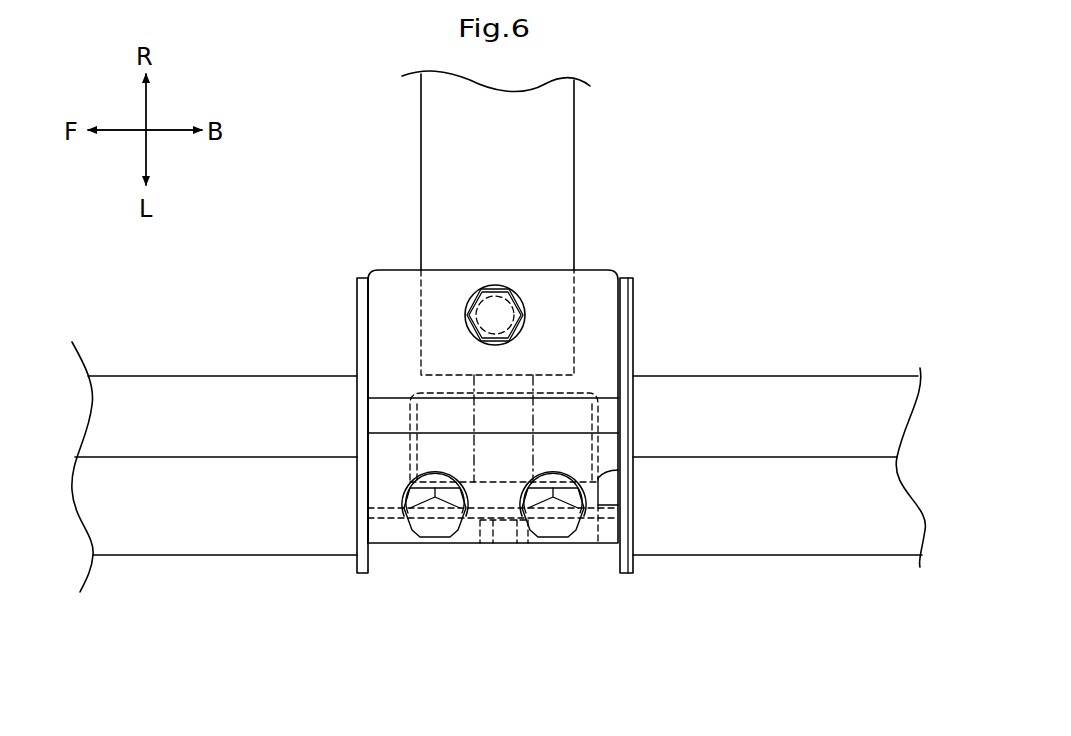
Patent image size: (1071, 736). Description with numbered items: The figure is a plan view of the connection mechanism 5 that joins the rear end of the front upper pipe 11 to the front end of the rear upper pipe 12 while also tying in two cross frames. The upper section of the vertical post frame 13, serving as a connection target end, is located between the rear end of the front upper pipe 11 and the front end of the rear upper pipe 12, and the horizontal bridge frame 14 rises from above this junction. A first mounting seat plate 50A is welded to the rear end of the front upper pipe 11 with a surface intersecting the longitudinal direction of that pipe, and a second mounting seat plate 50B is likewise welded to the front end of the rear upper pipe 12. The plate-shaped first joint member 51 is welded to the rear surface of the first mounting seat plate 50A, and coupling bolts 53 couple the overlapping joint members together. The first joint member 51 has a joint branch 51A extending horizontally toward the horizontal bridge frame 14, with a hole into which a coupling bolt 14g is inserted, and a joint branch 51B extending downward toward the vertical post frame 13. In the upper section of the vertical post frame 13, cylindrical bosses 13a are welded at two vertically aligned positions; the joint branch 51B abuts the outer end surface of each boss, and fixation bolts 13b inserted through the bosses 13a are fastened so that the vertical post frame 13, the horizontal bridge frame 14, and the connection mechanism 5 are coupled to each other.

The connection mechanism 5 is at (325, 315).
The front upper pipe 11 is at (190, 557).
The rear upper pipe 12 is at (793, 557).
The vertical post frame 13 is at (408, 467).
The cylindrical boss 13a is at (470, 458).
The fixation bolt 13b is at (505, 540).
The horizontal bridge frame 14 is at (560, 144).
The coupling bolt 14g is at (497, 287).
The first mounting seat plate 50A is at (355, 297).
The second mounting seat plate 50B is at (623, 283).
The first joint member 51 is at (516, 391).
The joint branch 51A is at (383, 288).
The joint branch 51B is at (600, 548).
The coupling bolt 53 is at (423, 530).